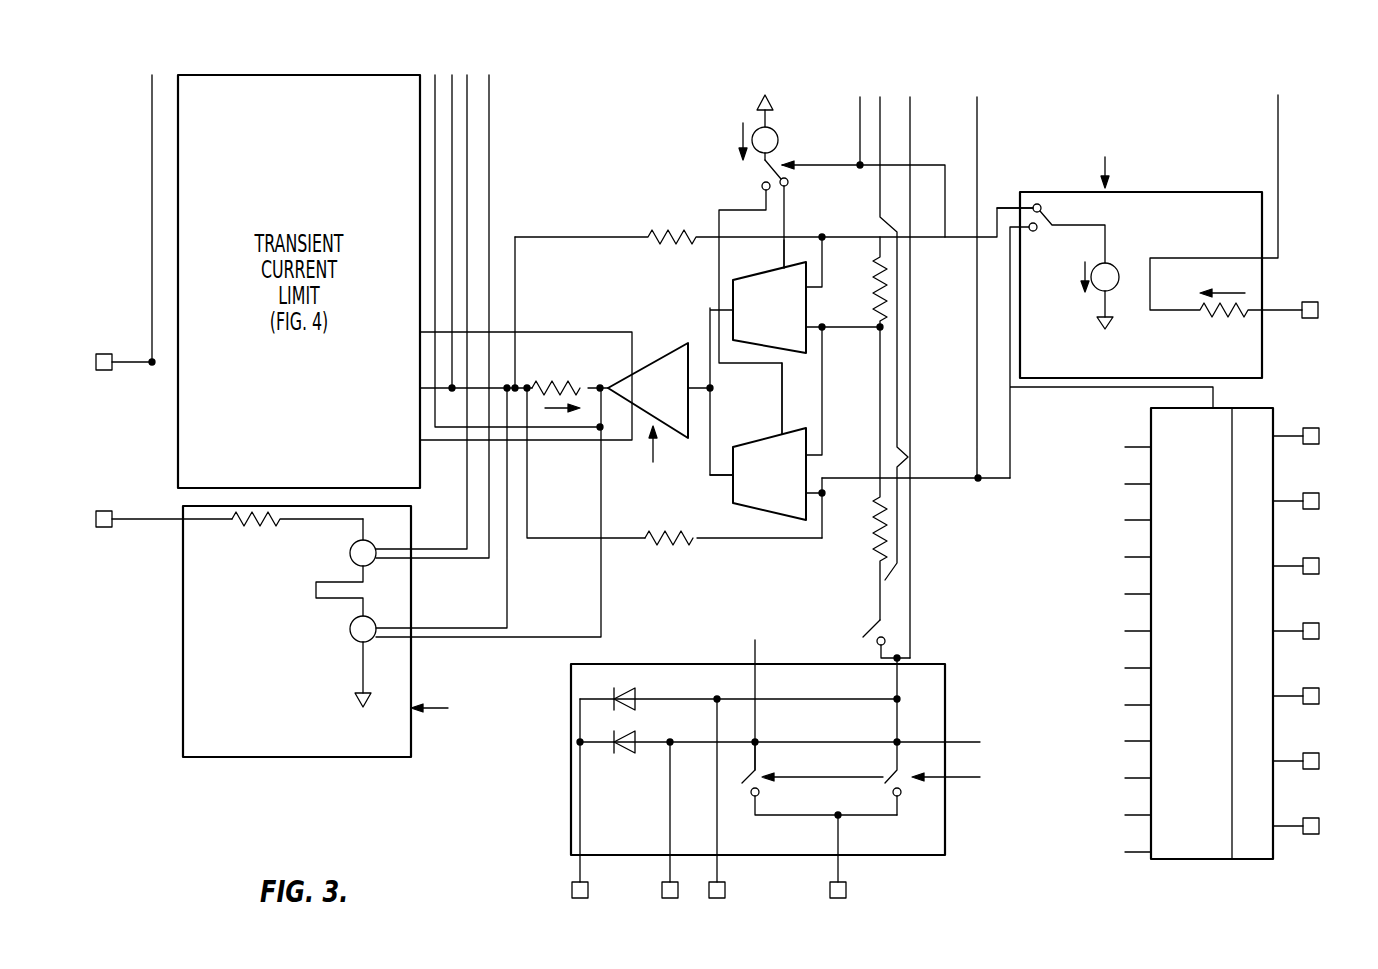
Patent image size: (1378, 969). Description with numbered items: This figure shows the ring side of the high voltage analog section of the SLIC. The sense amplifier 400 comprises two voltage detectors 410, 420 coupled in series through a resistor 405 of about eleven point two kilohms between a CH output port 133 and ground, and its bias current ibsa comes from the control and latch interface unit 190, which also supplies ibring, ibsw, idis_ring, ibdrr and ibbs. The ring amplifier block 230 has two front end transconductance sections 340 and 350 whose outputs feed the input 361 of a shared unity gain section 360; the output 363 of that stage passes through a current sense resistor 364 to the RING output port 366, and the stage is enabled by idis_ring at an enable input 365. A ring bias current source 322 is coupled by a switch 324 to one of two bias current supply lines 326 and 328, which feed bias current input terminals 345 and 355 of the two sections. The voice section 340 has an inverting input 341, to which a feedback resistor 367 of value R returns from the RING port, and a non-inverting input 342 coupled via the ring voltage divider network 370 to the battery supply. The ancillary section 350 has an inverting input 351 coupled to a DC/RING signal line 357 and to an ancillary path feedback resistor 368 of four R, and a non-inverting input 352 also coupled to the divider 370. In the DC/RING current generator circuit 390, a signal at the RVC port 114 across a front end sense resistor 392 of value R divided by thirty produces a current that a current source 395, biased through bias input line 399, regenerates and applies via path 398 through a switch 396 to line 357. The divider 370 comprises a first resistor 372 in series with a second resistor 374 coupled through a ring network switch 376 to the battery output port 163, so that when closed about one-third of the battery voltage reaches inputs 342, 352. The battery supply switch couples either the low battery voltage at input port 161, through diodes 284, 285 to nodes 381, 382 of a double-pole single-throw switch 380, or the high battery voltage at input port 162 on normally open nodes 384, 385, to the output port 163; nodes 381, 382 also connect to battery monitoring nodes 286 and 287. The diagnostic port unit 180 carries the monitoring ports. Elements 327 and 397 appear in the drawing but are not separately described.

The RVC port 114 is at (1311, 300).
The CH output port 133 is at (104, 527).
The battery supply switch input port 161 is at (571, 889).
The battery supply switch input port 162 is at (848, 889).
The battery supply switch output port 163 is at (901, 656).
The diagnostic port unit 180 is at (947, 836).
The control and latch interface unit 190 is at (1170, 860).
The ring amplifier block 230 is at (617, 379).
The diode 284 is at (636, 698).
The diode 285 is at (636, 738).
The battery monitoring node 286 is at (661, 893).
The battery monitoring node 287 is at (726, 893).
The ring bias current source 322 is at (778, 130).
The bias current supply switch 324 is at (762, 171).
The bias current supply line 326 is at (786, 233).
The wire 327 is at (840, 163).
The bias current supply line 328 is at (722, 216).
The front end transconductance circuit section 340 is at (770, 513).
The inverting input 341 is at (815, 500).
The non-inverting input 342 is at (810, 463).
The bias current input terminal 345 is at (783, 430).
The front end transconductance circuit section 350 is at (771, 270).
The inverting input 351 is at (814, 285).
The non-inverting input 352 is at (799, 398).
The bias current input terminal 355 is at (795, 256).
The DC/RING signal line 357 is at (958, 235).
The operational amplifier unity gain section 360 is at (668, 360).
The input of unity gain stage 361 is at (692, 365).
The output of unity gain stage 363 is at (607, 382).
The current sense resistor 364 is at (531, 382).
The enable input 365 is at (648, 422).
The RING output port 366 is at (104, 372).
The feedback resistor 367 is at (683, 548).
The ancillary path feedback resistor 368 is at (658, 227).
The ring voltage divider network 370 is at (916, 338).
The first resistor 372 is at (893, 299).
The second resistor 374 is at (893, 531).
The ring network switch 376 is at (887, 623).
The double-pole, single-throw switch 380 is at (871, 755).
The switch node 381 is at (758, 741).
The switch node 382 is at (888, 742).
The normally open node 384 is at (760, 792).
The normally open node 385 is at (903, 793).
The DC/RING current generator circuit 390 is at (1182, 190).
The front end sense resistor 392 is at (1207, 314).
The current source 395 is at (1100, 298).
The switch 396 is at (1043, 217).
The switch contact 397 is at (1033, 234).
The path 398 is at (1036, 201).
The bias input line 399 is at (1106, 170).
The sense amplifier 400 is at (312, 760).
The resistor 405 is at (267, 512).
The voltage detector 410 is at (347, 553).
The voltage detector 420 is at (350, 630).